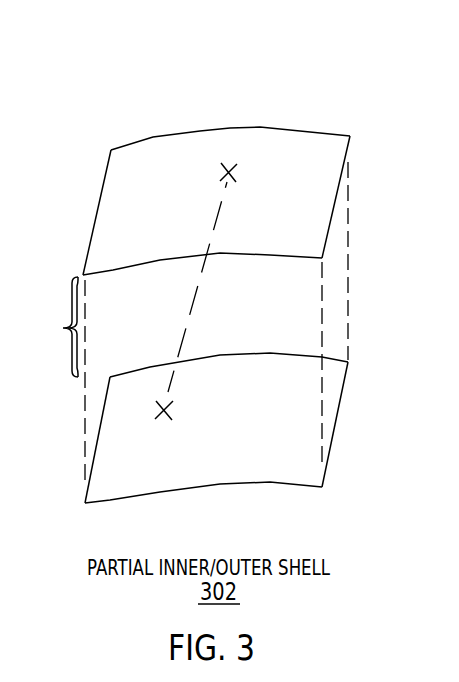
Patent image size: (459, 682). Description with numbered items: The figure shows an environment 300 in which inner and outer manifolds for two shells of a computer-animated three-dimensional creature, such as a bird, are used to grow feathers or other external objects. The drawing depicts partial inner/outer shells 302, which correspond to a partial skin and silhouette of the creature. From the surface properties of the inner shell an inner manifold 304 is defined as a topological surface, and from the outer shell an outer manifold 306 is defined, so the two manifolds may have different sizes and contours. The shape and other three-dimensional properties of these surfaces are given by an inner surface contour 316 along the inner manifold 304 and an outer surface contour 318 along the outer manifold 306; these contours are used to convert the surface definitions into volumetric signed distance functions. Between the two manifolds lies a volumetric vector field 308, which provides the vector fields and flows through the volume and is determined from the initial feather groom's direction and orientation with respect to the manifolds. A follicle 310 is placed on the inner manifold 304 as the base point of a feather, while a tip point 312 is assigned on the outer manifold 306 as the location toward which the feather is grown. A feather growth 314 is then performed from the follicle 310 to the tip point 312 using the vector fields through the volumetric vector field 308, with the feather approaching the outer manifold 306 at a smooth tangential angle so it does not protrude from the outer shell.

The environment 300 is at (333, 78).
The partial inner/outer shells 302 is at (153, 136).
The inner manifold 304 is at (335, 393).
The outer manifold 306 is at (323, 207).
The volumetric vector field 308 is at (54, 378).
The follicle 310 is at (175, 412).
The tip point 312 is at (238, 173).
The feather growth 314 is at (195, 317).
The inner surface contour 316 is at (203, 483).
The outer surface contour 318 is at (228, 130).